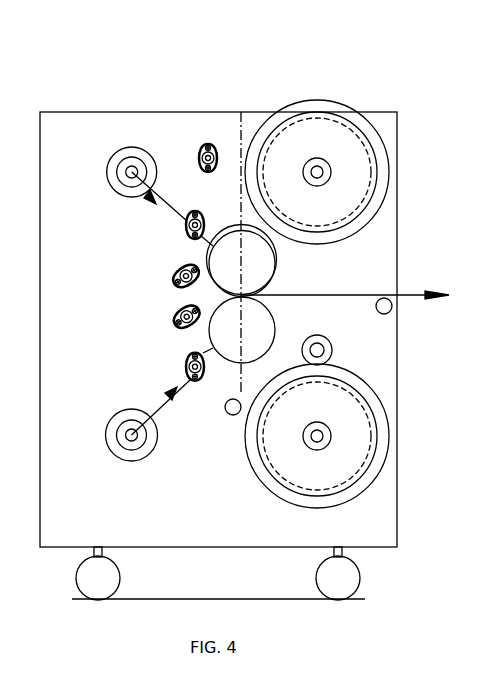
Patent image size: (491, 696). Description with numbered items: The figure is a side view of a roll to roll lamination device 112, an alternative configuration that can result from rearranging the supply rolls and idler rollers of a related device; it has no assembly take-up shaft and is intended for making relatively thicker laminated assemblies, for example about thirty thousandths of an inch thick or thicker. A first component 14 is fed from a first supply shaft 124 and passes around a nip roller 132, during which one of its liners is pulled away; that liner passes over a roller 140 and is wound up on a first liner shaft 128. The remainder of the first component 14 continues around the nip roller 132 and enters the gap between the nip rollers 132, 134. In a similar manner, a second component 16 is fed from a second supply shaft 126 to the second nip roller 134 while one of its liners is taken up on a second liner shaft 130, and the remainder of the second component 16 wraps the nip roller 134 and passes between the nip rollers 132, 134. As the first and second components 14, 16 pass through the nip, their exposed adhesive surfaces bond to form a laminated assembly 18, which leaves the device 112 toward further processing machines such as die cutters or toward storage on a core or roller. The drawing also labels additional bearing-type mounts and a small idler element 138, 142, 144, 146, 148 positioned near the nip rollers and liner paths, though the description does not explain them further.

The roll to roll lamination device 112 is at (285, 58).
The first component 14 is at (383, 159).
The second component 16 is at (375, 410).
The laminated assembly 18 is at (407, 294).
The first supply shaft 124 is at (317, 172).
The second supply shaft 126 is at (317, 436).
The first liner shaft 128 is at (132, 172).
The second liner shaft 130 is at (132, 435).
The nip roller 132 is at (262, 258).
The nip roller 134 is at (265, 317).
The bearing block 138 is at (208, 144).
The roller 140 is at (193, 211).
The bearing block 142 is at (176, 272).
The bearing block 144 is at (178, 322).
The bearing block 146 is at (192, 382).
The idler pin 148 is at (231, 415).